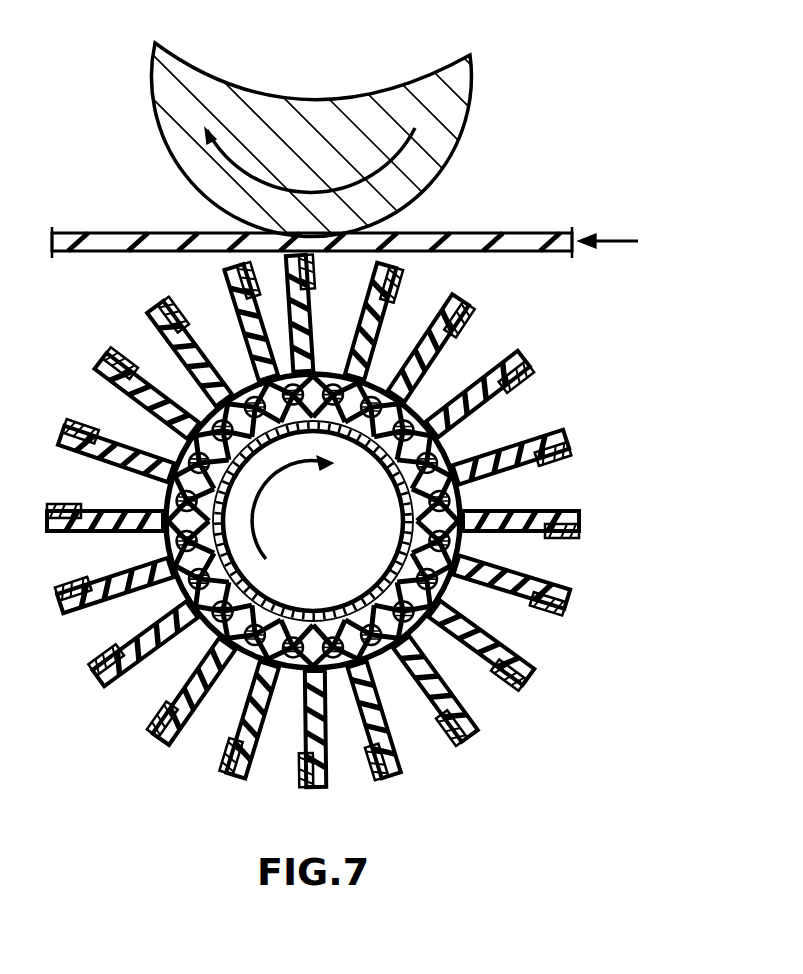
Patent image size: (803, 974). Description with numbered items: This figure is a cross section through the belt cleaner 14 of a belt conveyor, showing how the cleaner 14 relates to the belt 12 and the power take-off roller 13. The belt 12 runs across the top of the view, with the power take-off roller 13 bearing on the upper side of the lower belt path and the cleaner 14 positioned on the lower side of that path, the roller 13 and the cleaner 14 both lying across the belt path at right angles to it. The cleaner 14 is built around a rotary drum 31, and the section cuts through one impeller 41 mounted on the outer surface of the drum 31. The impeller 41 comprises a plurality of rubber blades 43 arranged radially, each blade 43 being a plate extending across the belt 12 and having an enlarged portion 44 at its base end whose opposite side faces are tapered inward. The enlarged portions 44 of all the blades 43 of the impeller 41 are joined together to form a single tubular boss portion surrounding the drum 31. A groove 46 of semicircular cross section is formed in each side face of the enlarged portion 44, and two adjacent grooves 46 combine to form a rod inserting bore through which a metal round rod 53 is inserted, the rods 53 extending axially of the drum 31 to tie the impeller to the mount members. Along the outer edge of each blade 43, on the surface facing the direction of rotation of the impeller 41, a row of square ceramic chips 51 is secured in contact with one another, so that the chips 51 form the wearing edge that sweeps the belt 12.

The belt 12 is at (523, 238).
The power take-off roller 13 is at (444, 141).
The cleaner 14 is at (355, 551).
The rotary drum 31 is at (250, 592).
The impeller 41 is at (355, 520).
The rubber blade 43 is at (450, 325).
The enlarged portion 44 is at (405, 474).
The groove 46 is at (425, 412).
The ceramic chip 51 is at (478, 312).
The metal round rod 53 is at (395, 450).